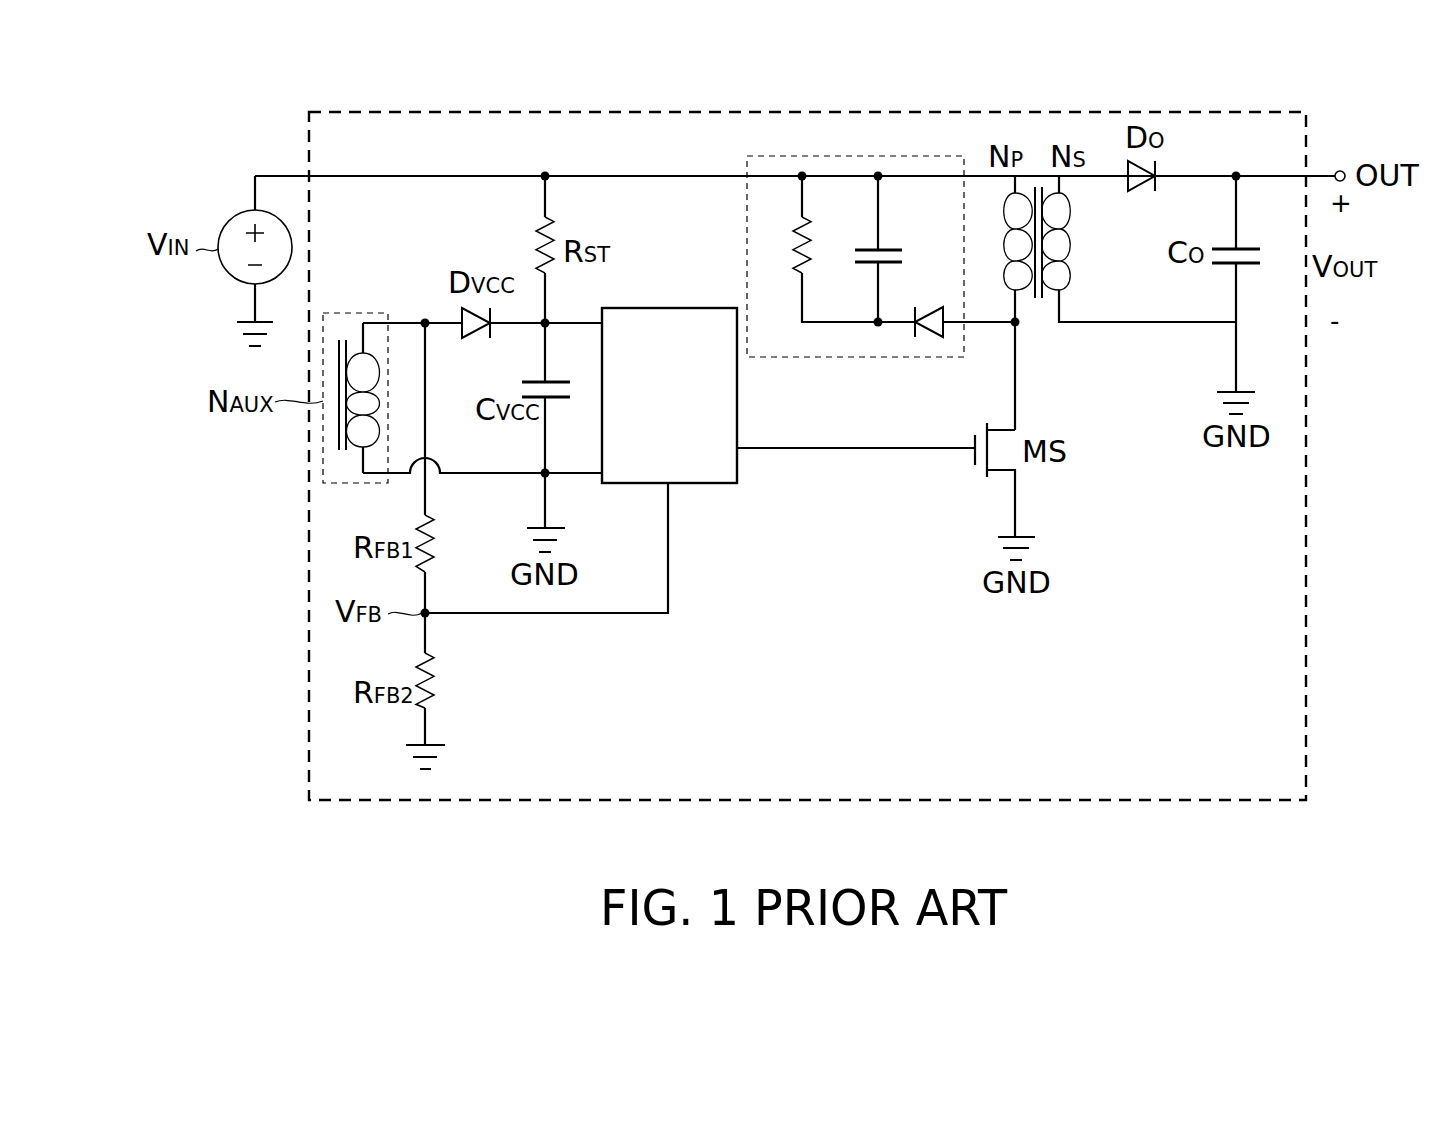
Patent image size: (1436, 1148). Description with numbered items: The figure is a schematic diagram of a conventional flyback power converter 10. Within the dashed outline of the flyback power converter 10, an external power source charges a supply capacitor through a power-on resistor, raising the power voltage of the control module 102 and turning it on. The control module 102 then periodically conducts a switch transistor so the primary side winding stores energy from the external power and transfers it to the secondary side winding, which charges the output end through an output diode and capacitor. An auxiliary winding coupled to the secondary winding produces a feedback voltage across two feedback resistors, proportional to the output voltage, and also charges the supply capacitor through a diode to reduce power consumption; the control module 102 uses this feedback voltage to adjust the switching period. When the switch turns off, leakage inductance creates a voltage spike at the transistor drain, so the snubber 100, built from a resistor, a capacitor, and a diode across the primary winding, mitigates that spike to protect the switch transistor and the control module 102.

The flyback power converter 10 is at (1306, 457).
The snubber 100 is at (857, 156).
The control module 102 is at (670, 308).